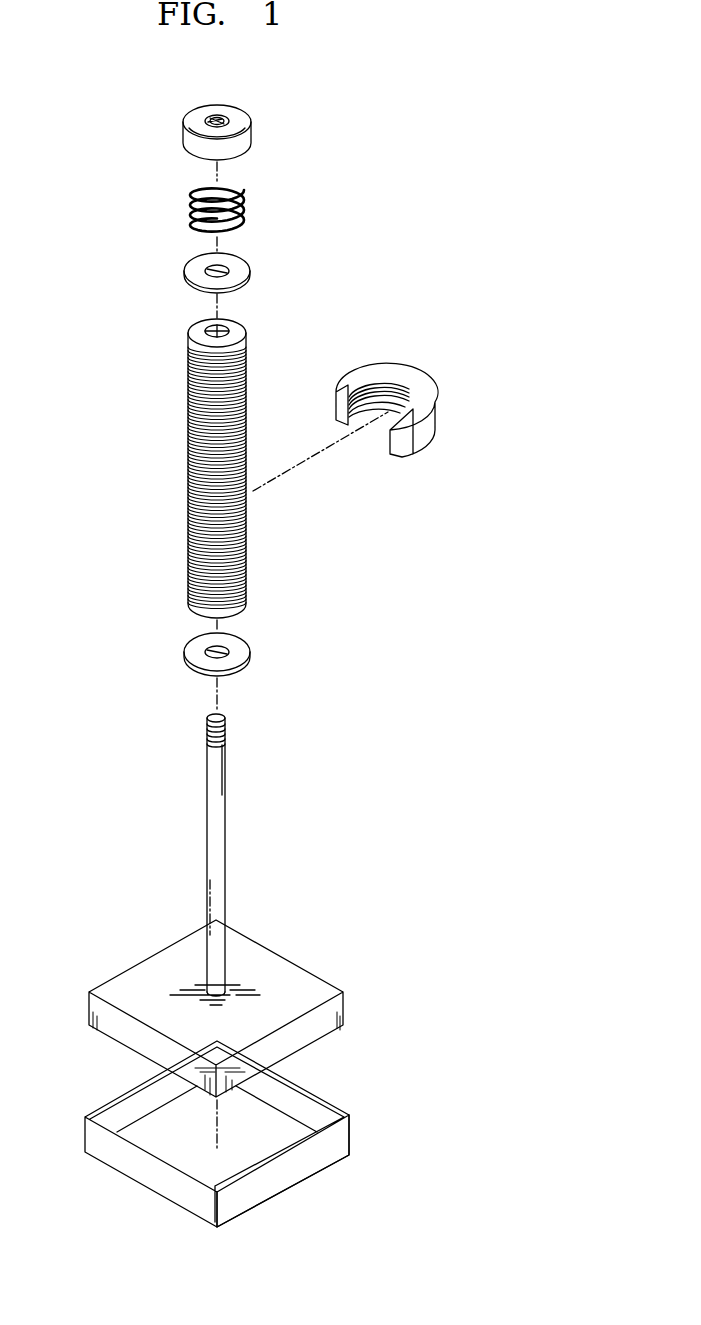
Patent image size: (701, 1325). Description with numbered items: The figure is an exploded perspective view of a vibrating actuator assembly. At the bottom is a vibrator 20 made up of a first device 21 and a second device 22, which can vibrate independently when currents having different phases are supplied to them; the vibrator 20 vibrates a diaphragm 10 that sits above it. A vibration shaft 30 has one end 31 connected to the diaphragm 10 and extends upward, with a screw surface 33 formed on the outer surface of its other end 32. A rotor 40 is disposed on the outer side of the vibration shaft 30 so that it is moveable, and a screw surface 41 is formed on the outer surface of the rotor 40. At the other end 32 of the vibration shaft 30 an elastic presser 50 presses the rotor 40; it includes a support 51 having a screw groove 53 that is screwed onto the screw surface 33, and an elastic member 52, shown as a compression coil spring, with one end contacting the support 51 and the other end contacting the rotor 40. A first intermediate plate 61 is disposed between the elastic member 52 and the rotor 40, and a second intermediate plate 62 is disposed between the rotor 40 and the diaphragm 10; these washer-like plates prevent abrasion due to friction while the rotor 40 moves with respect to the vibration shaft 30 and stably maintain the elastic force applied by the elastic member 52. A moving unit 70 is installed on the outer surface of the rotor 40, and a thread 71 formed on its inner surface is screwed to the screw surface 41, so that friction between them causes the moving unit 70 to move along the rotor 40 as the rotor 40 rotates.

The diaphragm 10 is at (328, 981).
The vibrator 20 is at (63, 1203).
The first device 21 is at (133, 1175).
The second device 22 is at (248, 1205).
The vibration shaft 30 is at (186, 842).
The one end 31 is at (213, 992).
The other end 32 is at (208, 716).
The screw surface 33 is at (228, 733).
The rotor 40 is at (262, 448).
The screw surface 41 is at (247, 543).
The elastic presser 50 is at (321, 128).
The support 51 is at (247, 143).
The elastic member 52 is at (243, 200).
The screw groove 53 is at (220, 113).
The first intermediate plate 61 is at (245, 270).
The second intermediate plate 62 is at (246, 656).
The moving unit 70 is at (430, 379).
The thread 71 is at (387, 390).